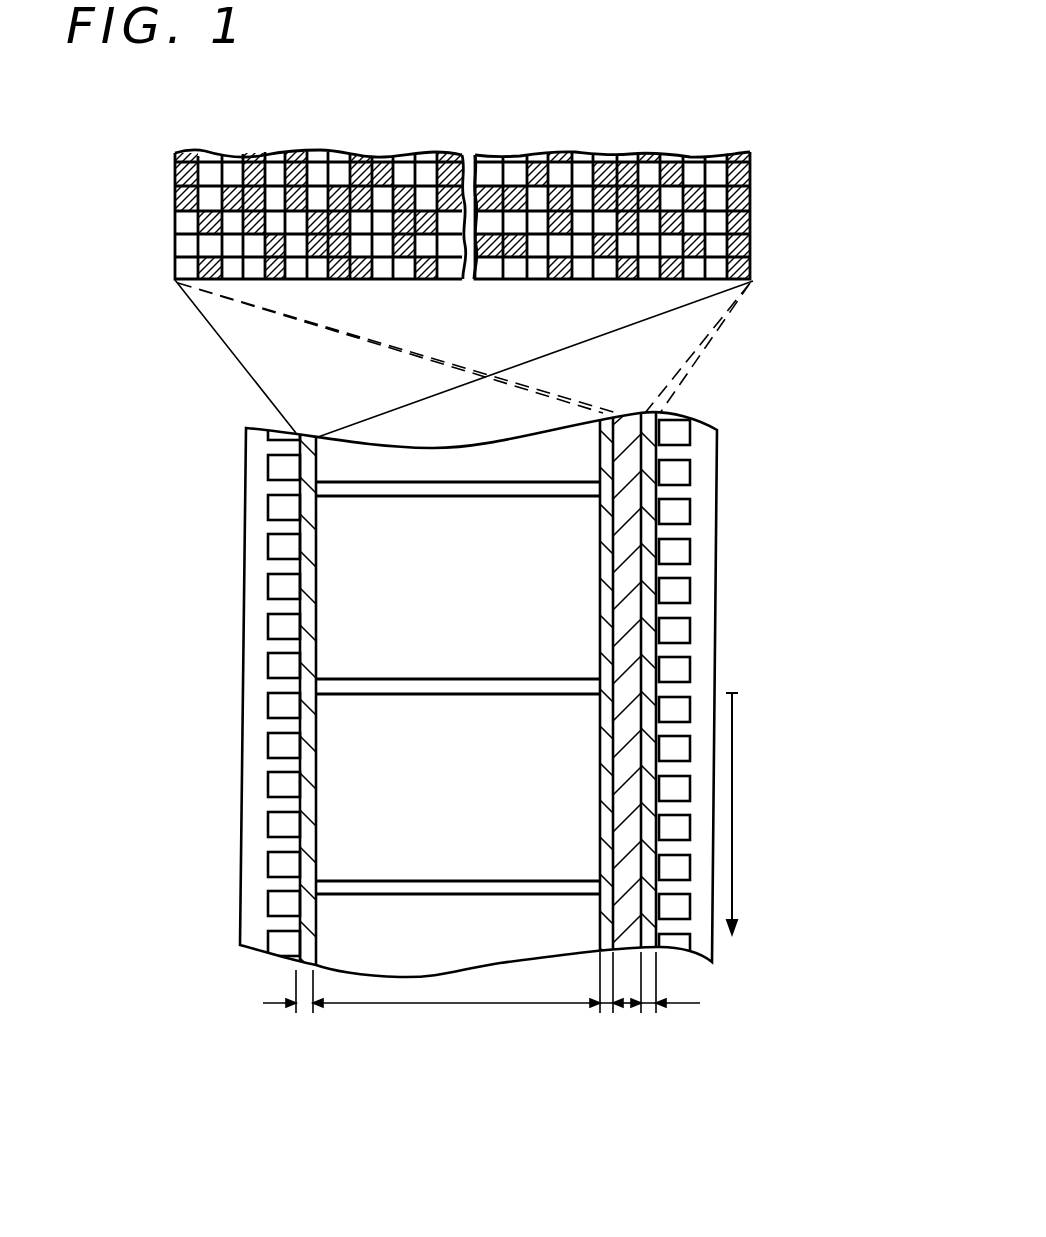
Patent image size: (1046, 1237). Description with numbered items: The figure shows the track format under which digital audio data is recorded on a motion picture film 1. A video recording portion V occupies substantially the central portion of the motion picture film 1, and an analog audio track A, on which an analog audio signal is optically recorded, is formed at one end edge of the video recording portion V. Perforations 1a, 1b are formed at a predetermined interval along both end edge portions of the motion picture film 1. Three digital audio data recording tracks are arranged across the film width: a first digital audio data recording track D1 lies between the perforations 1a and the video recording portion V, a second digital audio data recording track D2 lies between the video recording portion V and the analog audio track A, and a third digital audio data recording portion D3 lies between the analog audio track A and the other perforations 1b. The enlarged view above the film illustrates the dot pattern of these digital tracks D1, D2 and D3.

The motion picture film 1 is at (717, 612).
The perforations 1a is at (270, 592).
The perforations 1b is at (687, 548).
The first digital audio data recording track D1 is at (300, 1037).
The second digital audio data recording track D2 is at (603, 1008).
The third digital audio data recording portion D3 is at (650, 1008).
The analog audio track A is at (628, 1008).
The video recording portion V is at (455, 1005).